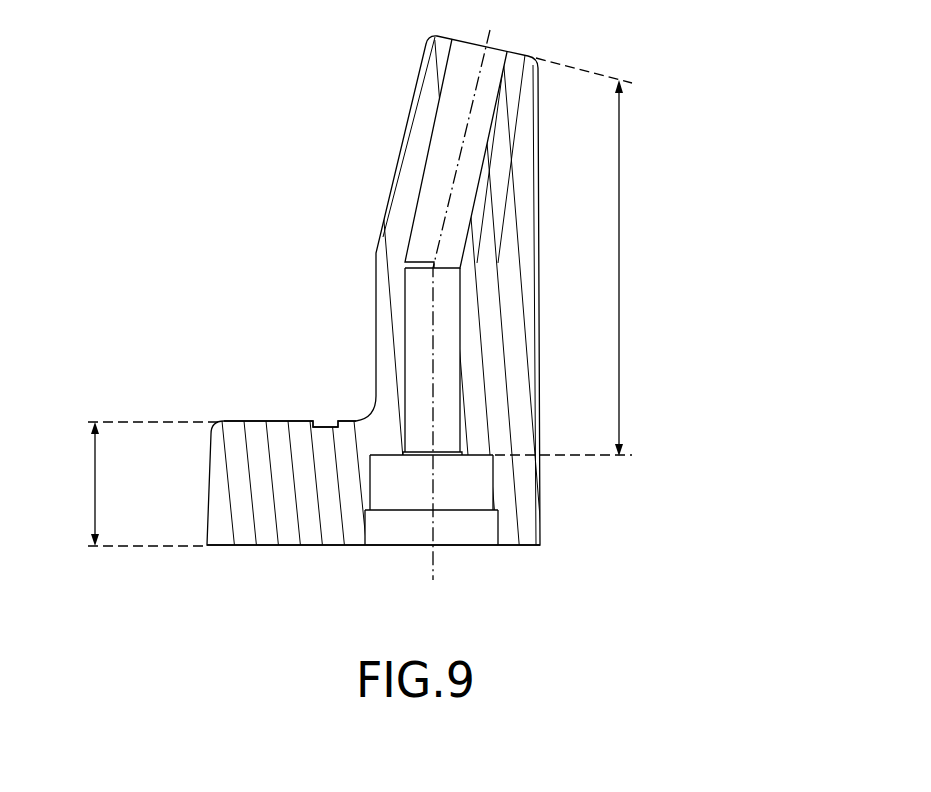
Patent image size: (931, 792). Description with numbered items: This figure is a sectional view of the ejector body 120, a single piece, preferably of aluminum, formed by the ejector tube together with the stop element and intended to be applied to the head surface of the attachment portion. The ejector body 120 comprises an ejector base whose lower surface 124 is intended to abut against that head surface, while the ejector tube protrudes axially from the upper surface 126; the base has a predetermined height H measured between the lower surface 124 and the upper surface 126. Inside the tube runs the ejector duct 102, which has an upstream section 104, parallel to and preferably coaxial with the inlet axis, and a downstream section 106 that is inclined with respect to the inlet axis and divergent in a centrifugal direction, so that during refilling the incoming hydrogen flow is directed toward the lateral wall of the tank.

The ejector body 120 is at (724, 170).
The downstream section 106 is at (445, 165).
The upstream section 104 is at (427, 364).
The upper surface 126 is at (251, 420).
The lower surface 124 is at (246, 548).
The ejector duct 102 is at (620, 266).
The height of the ejector base H is at (143, 484).